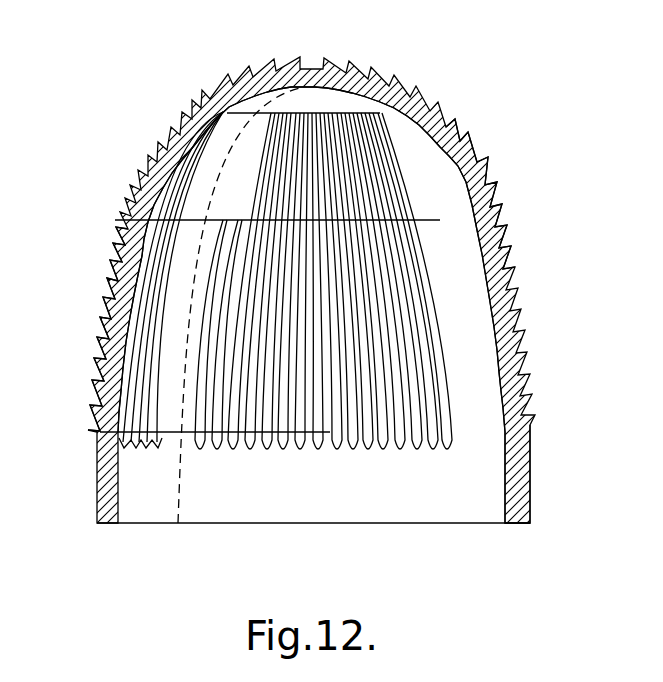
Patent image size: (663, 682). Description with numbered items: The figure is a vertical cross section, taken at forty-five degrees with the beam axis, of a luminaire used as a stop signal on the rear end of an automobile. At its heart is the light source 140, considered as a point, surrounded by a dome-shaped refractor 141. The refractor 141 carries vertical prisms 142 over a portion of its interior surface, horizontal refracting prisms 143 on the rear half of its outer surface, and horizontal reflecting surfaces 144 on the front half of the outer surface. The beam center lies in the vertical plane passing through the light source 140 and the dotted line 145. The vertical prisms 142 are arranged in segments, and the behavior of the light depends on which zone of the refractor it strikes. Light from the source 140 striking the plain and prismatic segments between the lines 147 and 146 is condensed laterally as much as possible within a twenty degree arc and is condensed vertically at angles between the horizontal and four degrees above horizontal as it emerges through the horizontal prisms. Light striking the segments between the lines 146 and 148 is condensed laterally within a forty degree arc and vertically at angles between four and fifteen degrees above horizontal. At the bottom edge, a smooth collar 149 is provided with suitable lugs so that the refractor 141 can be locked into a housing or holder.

The light source 140 is at (312, 238).
The refractor 141 is at (137, 193).
The vertical prisms 142 is at (390, 160).
The horizontal refracting prisms 143 is at (107, 292).
The horizontal reflecting surfaces 144 is at (500, 208).
The dotted line 145 is at (180, 497).
The line 146 is at (115, 220).
The line 147 is at (100, 432).
The line 148 is at (227, 112).
The smooth collar 149 is at (533, 467).